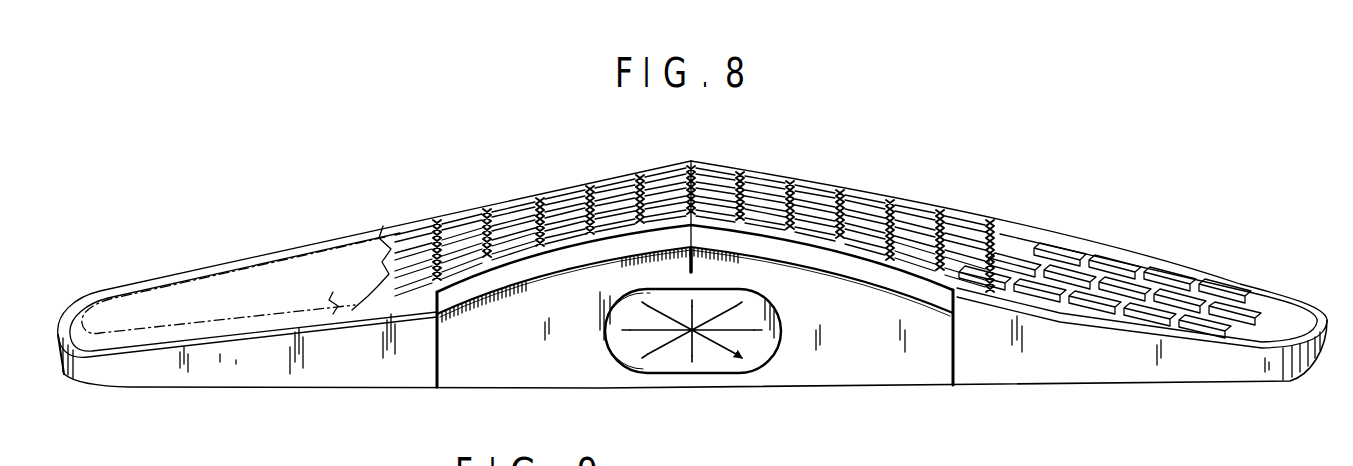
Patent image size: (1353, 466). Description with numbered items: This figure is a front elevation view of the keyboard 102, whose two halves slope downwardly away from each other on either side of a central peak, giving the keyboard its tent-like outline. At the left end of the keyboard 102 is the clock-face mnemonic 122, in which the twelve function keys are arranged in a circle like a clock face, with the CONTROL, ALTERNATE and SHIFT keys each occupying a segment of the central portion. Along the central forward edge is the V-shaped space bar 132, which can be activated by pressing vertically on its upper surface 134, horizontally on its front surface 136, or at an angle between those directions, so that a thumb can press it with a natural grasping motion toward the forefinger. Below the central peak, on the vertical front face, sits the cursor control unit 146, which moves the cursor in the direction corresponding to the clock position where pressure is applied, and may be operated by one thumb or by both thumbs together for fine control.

The keyboard 102 is at (1282, 269).
The clock-face mnemonic 122 is at (140, 332).
The V-shaped space bar 132 is at (833, 300).
The upper surface 134 is at (818, 262).
The front surface 136 is at (905, 297).
The cursor control unit 146 is at (714, 362).